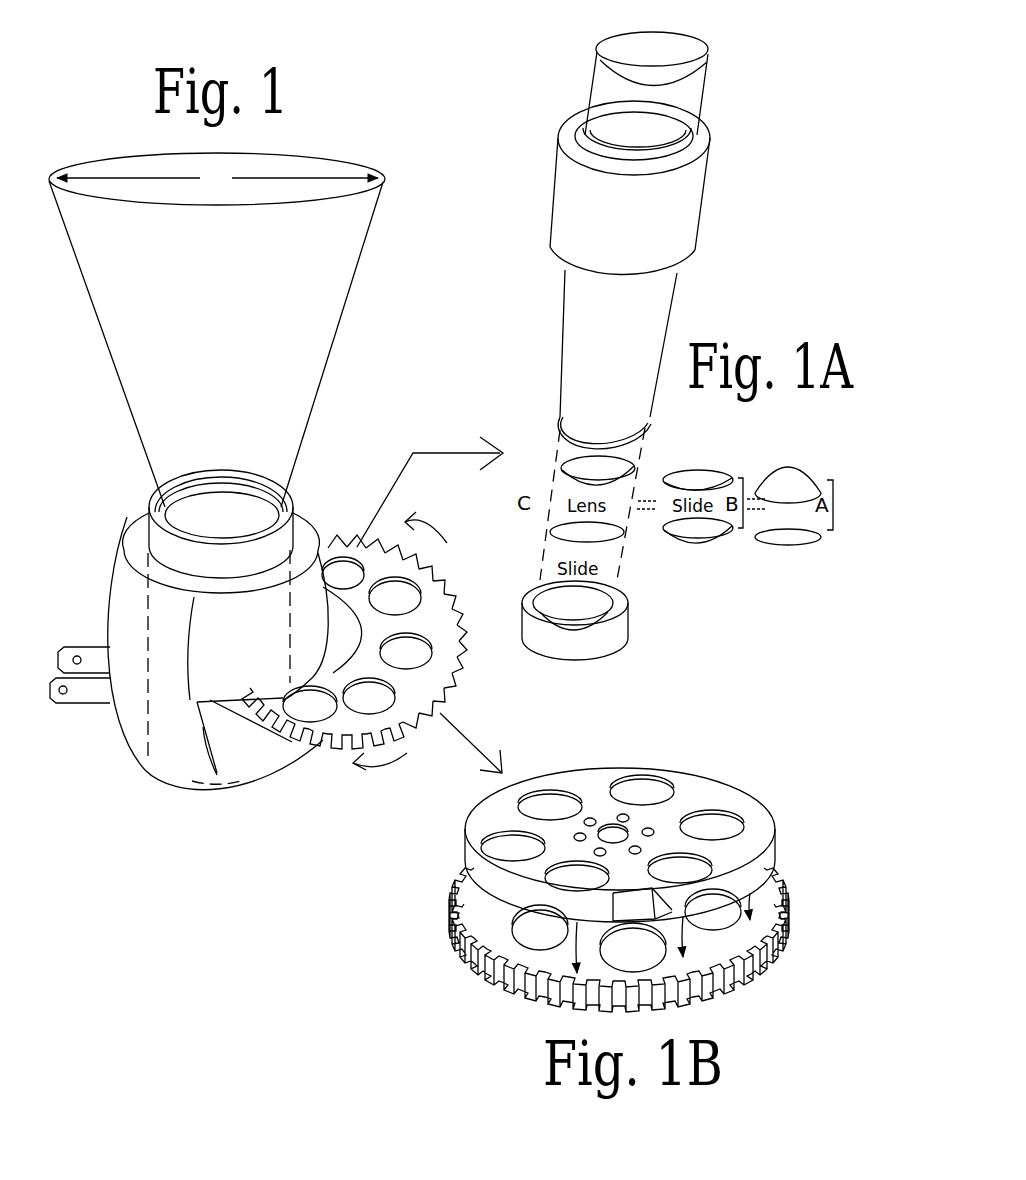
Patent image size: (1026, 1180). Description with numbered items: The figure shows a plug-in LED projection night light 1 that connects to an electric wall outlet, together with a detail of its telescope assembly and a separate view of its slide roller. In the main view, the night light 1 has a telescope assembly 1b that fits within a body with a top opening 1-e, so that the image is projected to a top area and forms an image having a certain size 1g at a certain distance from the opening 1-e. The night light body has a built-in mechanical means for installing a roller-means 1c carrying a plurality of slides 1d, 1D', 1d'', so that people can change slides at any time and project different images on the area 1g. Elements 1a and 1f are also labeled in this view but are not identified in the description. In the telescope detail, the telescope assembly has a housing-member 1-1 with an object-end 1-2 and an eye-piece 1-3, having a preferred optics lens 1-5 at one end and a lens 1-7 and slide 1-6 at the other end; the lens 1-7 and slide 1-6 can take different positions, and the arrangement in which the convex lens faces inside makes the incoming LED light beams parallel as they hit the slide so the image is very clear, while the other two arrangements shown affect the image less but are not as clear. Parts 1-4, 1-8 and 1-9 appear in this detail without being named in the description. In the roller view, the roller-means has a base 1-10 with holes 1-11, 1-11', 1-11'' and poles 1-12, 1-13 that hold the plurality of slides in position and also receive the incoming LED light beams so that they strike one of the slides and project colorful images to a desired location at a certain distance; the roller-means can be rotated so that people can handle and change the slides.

In FIG. 1, the LED projection night light 1 is at (118, 565).
In FIG. 1, the plug blades 1a is at (90, 694).
In FIG. 1, the telescope assembly 1b is at (172, 762).
In FIG. 1, the roller-means 1c is at (327, 752).
In FIG. 1, the slide 1d is at (297, 768).
In FIG. 1, the slide 1d'' is at (428, 588).
In FIG. 1, the slide 1D' is at (437, 679).
In FIG. 1, the top opening 1-e is at (188, 526).
In FIG. 1, the wheel opening aligned with optical path 1f is at (335, 560).
In FIG. 1, the image area 1g is at (217, 179).
In FIG. 1A, the housing-member 1-1 is at (562, 303).
In FIG. 1A, the object-end 1-2 is at (577, 200).
In FIG. 1A, the eye-piece 1-3 is at (573, 414).
In FIG. 1A, the inner ring 1-4 is at (600, 140).
In FIG. 1A, the optics lens 1-5 is at (598, 49).
In FIG. 1A, the slide 1-6 is at (698, 477).
In FIG. 1A, the lens 1-7 is at (690, 543).
In FIG. 1A, the ring opening 1-8 is at (592, 620).
In FIG. 1A, the ring 1-9 is at (607, 642).
In FIG. 1B, the base 1-10 is at (483, 947).
In FIG. 1B, the hole 1-11 is at (464, 855).
In FIG. 1B, the hole 1-11' is at (742, 805).
In FIG. 1B, the hole 1-11'' is at (664, 760).
In FIG. 1B, the pole 1-12 is at (588, 815).
In FIG. 1B, the pole 1-13 is at (617, 837).